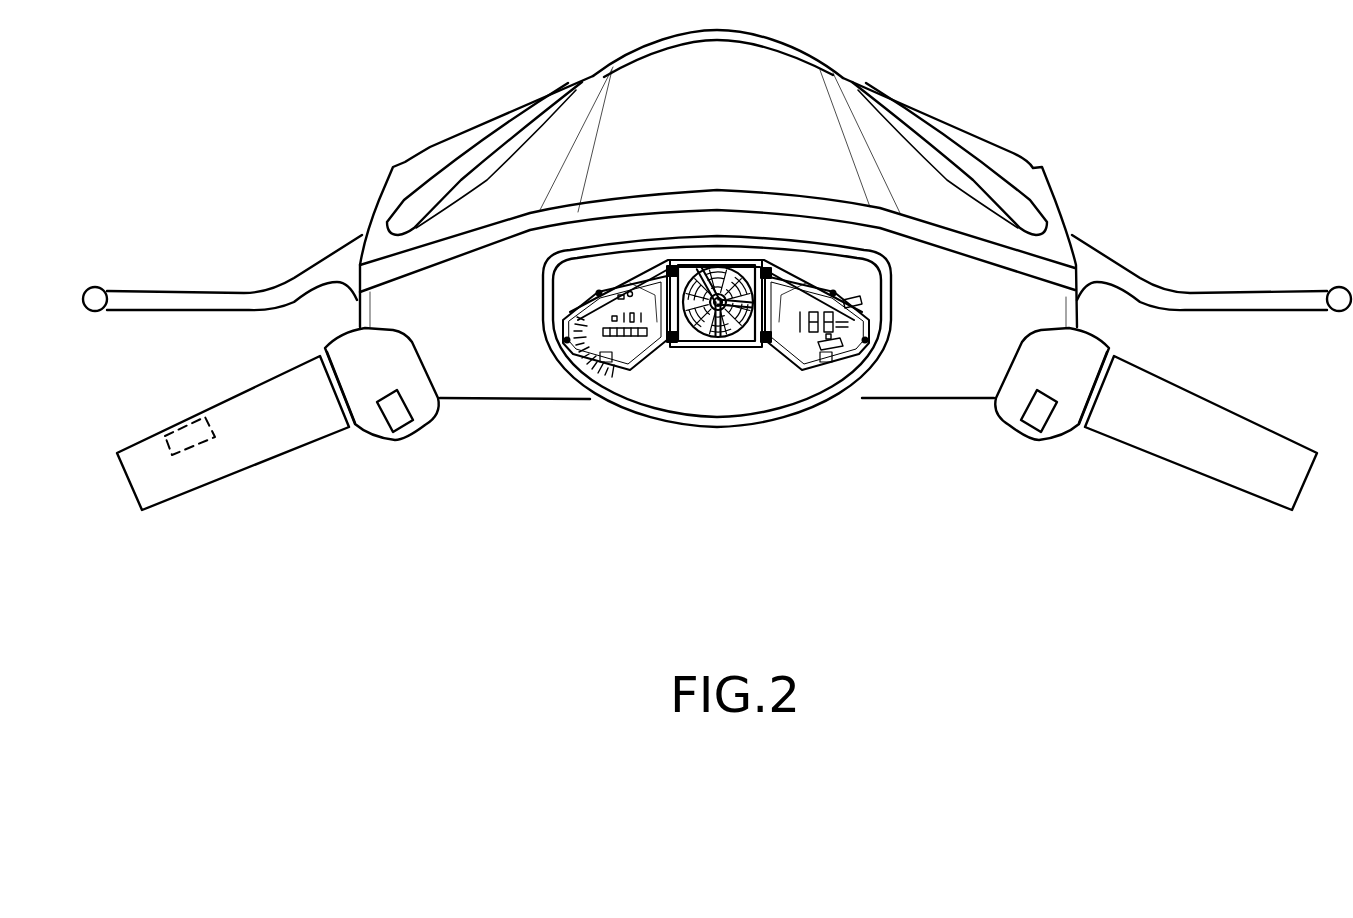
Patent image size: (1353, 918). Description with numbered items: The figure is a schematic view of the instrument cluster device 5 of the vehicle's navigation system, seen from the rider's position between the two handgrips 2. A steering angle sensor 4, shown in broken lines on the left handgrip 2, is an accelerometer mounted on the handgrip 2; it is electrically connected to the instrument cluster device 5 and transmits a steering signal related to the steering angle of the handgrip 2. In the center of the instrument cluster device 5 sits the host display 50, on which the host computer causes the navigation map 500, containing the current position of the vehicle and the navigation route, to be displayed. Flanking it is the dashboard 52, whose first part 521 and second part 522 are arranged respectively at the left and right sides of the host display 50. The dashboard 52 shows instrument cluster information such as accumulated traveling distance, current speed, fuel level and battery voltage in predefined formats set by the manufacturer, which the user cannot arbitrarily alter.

The handgrip 2 is at (215, 463).
The steering angle sensor 4 is at (183, 427).
The instrument cluster device 5 is at (797, 381).
The host display 50 is at (702, 340).
The navigation map 500 is at (738, 327).
The dashboard 52 is at (601, 279).
The first part 521 is at (599, 293).
The second part 522 is at (836, 292).